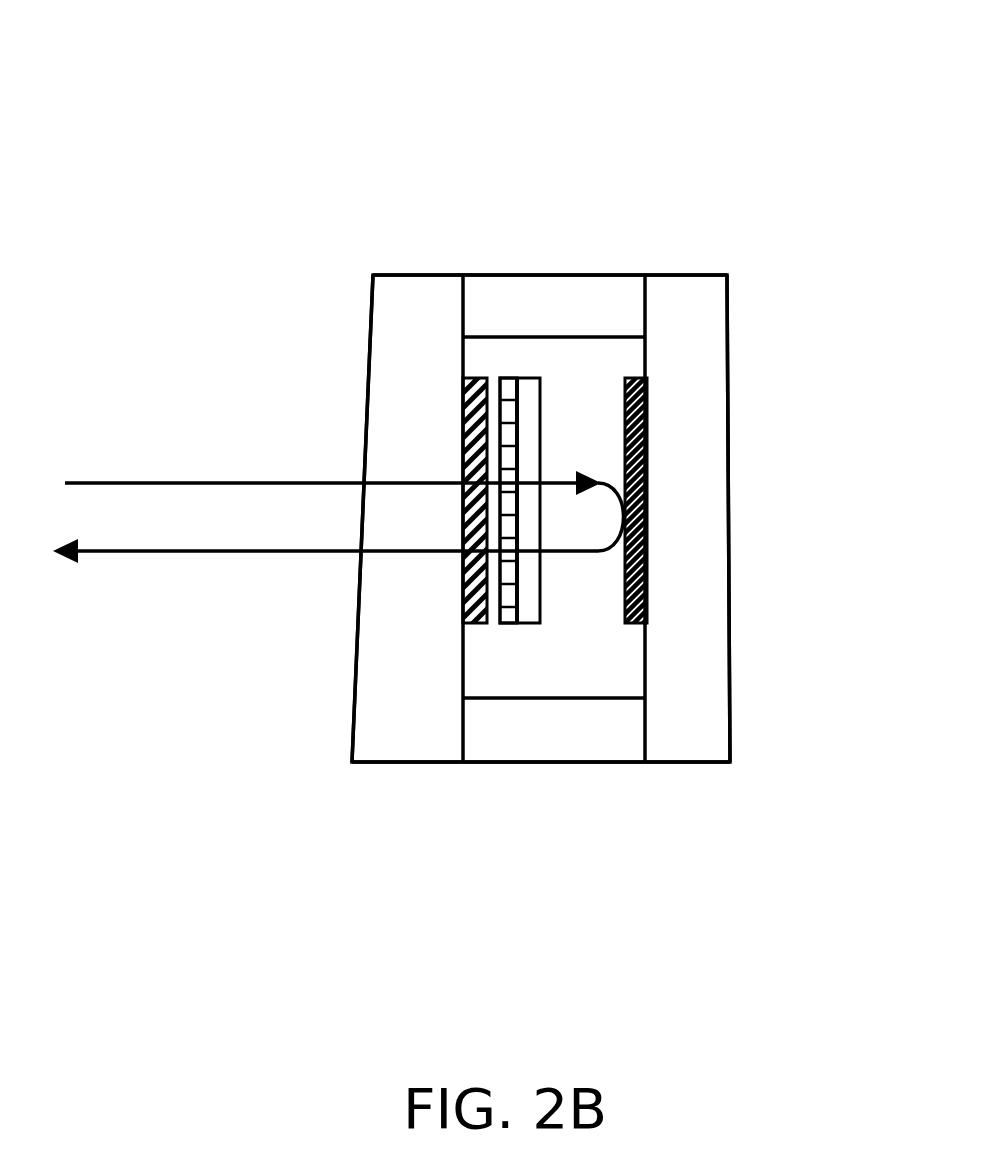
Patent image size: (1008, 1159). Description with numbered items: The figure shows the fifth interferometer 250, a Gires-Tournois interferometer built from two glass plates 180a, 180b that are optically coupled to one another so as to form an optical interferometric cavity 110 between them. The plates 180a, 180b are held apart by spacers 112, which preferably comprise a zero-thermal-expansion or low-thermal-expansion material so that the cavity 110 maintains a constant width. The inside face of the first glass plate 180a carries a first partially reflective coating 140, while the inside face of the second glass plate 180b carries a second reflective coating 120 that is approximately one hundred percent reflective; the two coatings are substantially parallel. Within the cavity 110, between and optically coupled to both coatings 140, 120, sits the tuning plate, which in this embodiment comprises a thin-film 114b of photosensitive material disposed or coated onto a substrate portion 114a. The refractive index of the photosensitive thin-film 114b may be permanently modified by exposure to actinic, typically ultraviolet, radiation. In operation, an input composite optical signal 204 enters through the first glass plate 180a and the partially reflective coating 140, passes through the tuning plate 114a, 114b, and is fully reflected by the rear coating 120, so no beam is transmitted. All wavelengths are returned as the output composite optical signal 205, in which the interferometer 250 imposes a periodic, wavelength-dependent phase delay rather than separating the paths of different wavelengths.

The fifth interferometer 250 is at (383, 34).
The first glass plate 180a is at (373, 275).
The second glass plate 180b is at (727, 275).
The spacers 112 is at (480, 275).
The optical interferometric cavity 110 is at (522, 677).
The first partially reflective coating 140 is at (477, 625).
The substrate portion 114a is at (531, 378).
The thin-film of photosensitive material 114b is at (503, 625).
The second reflective coating 120 is at (635, 378).
The composite optical signal 204 is at (152, 483).
The output composite optical signal 205 is at (92, 556).